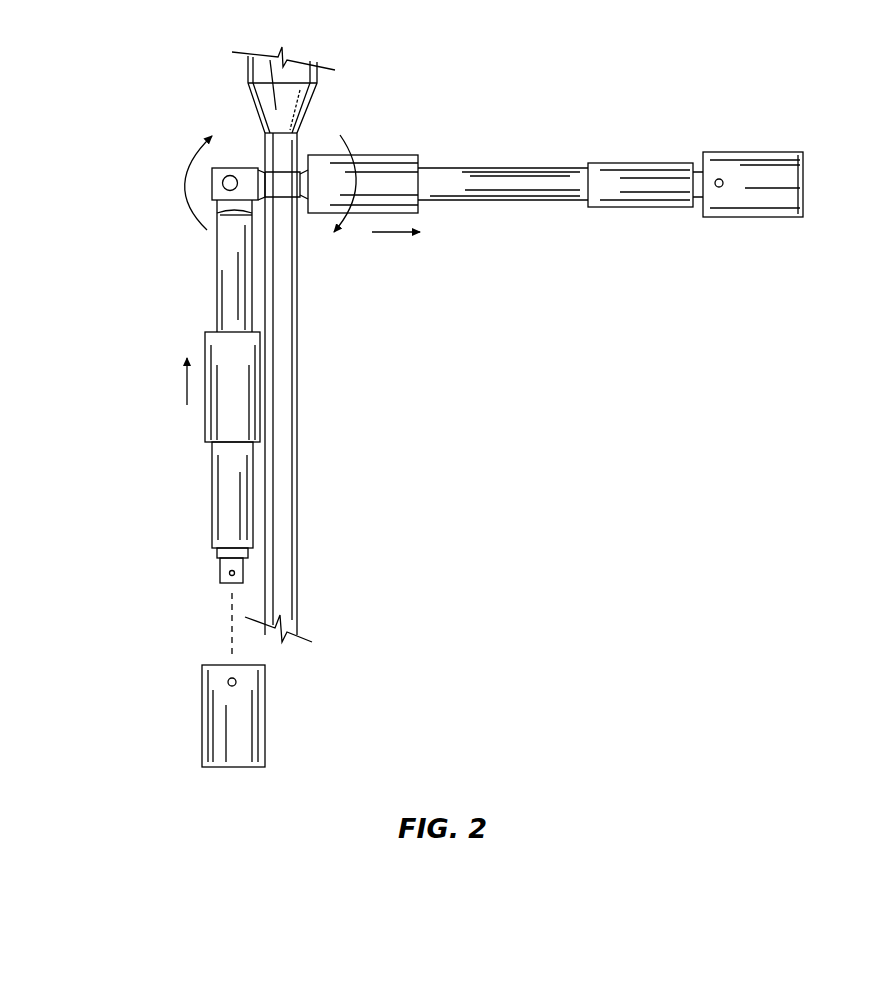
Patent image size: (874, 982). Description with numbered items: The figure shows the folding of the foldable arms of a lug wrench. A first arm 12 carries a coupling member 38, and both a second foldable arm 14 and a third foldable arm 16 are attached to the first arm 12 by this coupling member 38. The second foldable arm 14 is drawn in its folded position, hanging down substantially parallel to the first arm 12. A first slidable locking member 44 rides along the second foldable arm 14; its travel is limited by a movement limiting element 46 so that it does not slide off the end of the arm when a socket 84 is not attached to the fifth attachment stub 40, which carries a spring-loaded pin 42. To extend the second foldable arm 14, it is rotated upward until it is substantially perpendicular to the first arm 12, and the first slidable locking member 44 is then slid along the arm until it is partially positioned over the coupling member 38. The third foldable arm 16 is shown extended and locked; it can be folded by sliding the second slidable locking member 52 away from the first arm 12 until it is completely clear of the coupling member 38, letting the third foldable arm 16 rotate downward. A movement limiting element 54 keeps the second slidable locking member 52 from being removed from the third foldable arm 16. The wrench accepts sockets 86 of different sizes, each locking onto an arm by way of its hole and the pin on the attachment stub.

The first arm 12 is at (285, 405).
The second foldable arm 14 is at (218, 272).
The third foldable arm 16 is at (497, 168).
The coupling member 38 is at (252, 175).
The fifth attachment stub 40 is at (220, 565).
The spring-loaded pin 42 is at (230, 575).
The first slidable locking member 44 is at (204, 423).
The movement limiting element 46 is at (212, 502).
The second slidable locking member 52 is at (383, 155).
The movement limiting element 54 is at (640, 163).
The socket 84 is at (773, 152).
The sockets 86 is at (721, 179).